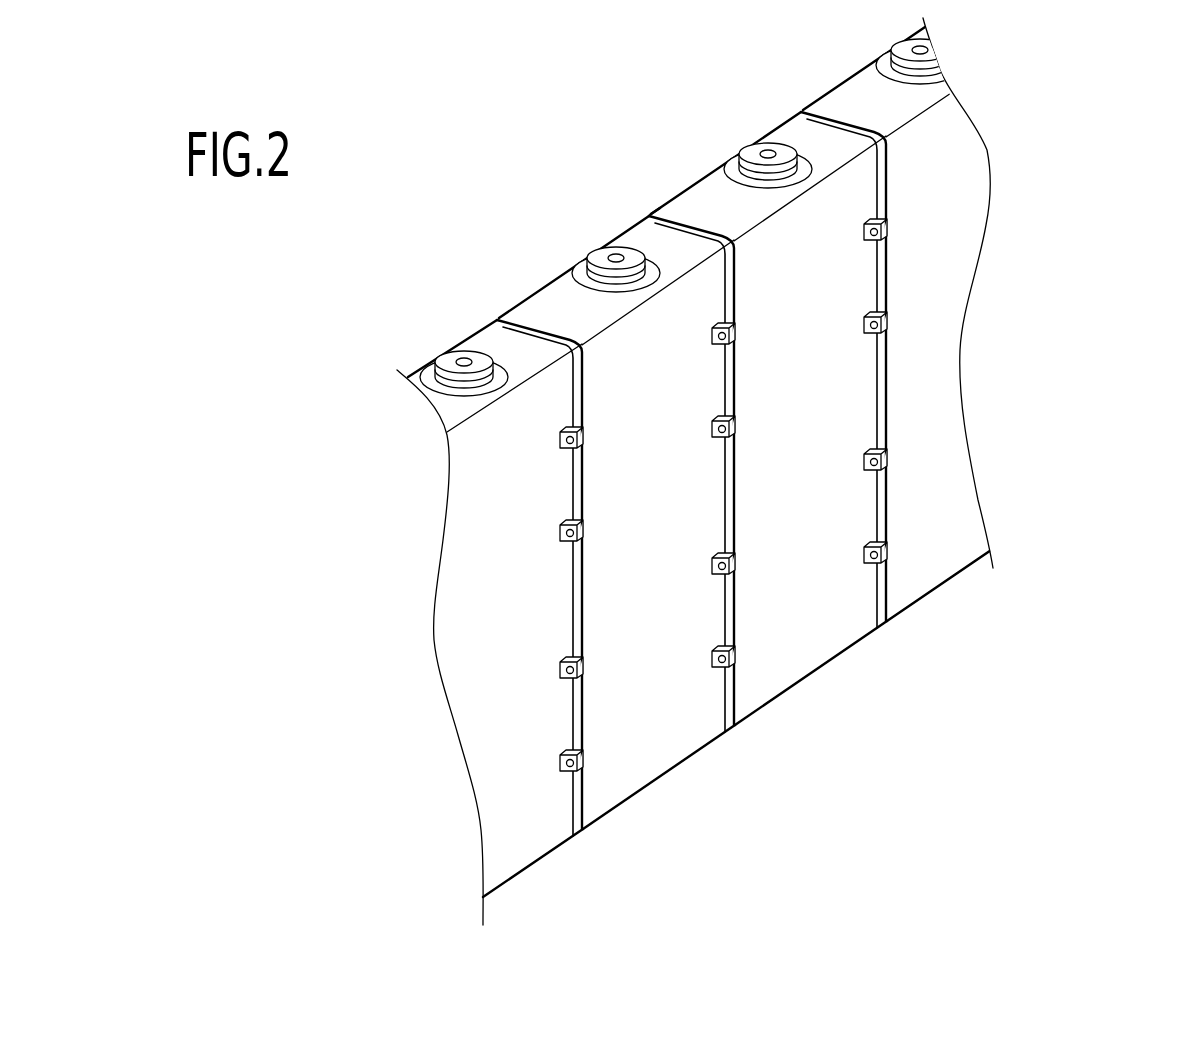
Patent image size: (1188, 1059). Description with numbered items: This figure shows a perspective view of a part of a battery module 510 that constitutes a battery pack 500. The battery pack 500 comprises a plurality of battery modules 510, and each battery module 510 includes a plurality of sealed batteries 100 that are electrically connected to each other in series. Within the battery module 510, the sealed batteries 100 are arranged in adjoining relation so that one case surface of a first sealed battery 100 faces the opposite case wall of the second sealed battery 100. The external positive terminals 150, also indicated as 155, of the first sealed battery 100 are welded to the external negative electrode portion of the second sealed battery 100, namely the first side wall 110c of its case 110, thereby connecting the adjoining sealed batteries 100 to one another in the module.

The battery pack 500 is at (722, 466).
The sealed battery 100 is at (722, 466).
The battery module 510 is at (640, 182).
The external positive terminal 150 is at (721, 504).
The spacer protrusion 155 is at (712, 430).
The case 110 is at (722, 466).
The first side wall 110c is at (485, 643).